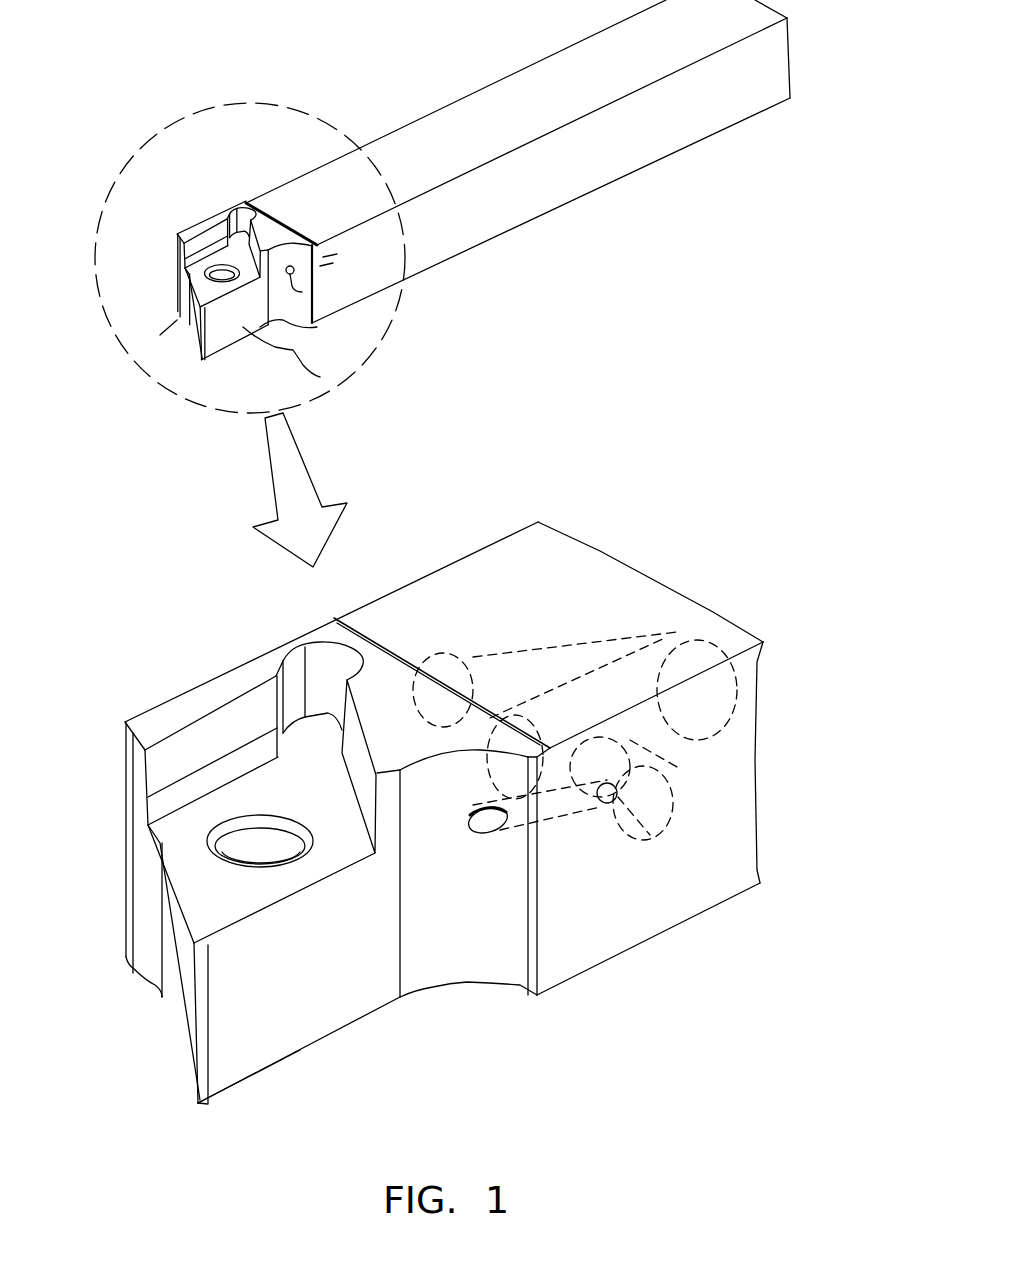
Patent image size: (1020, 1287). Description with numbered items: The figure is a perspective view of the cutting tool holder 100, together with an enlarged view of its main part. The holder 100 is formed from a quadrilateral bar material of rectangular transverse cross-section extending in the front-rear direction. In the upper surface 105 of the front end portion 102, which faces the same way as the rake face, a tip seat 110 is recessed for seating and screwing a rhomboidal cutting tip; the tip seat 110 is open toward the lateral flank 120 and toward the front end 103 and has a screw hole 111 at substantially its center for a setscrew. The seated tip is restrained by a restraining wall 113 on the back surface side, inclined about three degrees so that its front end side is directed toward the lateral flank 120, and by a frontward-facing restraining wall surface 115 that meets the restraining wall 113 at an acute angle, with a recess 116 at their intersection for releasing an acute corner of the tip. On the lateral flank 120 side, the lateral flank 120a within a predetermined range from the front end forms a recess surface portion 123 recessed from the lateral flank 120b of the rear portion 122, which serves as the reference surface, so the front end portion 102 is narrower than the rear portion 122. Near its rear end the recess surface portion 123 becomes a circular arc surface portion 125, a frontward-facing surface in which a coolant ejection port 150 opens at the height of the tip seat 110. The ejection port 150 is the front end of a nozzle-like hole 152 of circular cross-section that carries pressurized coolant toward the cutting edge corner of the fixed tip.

The cutting tool holder 100 is at (388, 100).
The front end portion 102 is at (176, 218).
The front end 103 is at (190, 323).
The upper surface 105 is at (269, 202).
The tip seat 110 is at (212, 256).
The screw hole 111 is at (287, 848).
The restraining wall 113 is at (170, 760).
The frontward-facing restraining wall surface 115 is at (368, 763).
The recess (relief) 116 is at (322, 682).
The lateral flank 120 is at (472, 215).
The lateral flank in predetermined range 120a is at (247, 1057).
The lateral flank of rear portion (reference surface) 120b is at (605, 922).
The rear portion 122 is at (757, 770).
The recess surface portion 123 is at (320, 377).
The circular arc surface portion 125 is at (477, 927).
The coolant ejection port 150 is at (302, 292).
The nozzle-like hole 152 is at (547, 830).